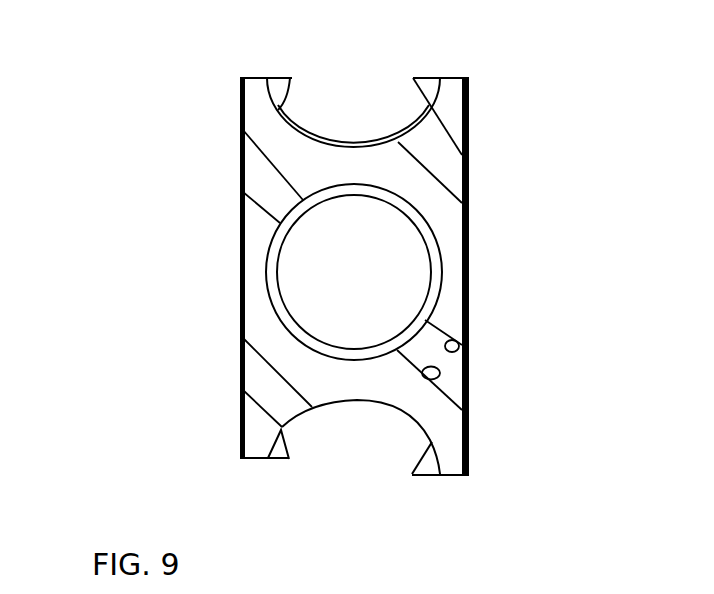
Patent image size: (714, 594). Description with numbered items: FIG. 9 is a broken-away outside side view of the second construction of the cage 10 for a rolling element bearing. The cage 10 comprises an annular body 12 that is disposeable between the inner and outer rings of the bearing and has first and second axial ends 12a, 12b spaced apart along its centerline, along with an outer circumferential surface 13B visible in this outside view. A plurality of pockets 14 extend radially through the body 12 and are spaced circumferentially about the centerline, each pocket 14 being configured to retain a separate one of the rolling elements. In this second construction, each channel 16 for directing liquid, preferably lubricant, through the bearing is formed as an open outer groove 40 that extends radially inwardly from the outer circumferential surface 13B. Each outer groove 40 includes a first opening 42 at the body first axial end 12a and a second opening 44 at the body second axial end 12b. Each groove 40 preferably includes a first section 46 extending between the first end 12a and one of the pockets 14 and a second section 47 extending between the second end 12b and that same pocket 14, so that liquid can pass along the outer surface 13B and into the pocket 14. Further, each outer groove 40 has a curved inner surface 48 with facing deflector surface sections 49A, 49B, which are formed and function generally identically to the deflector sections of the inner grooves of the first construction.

The cage 10 is at (113, 118).
The annular body 12 is at (193, 218).
The first axial end 12a is at (472, 315).
The second axial end 12b is at (242, 258).
The outer circumferential surface 13B is at (388, 387).
The pocket 14 is at (395, 102).
The channel 16 is at (523, 190).
The open outer groove 40 is at (475, 195).
The first opening 42 is at (470, 183).
The second opening 44 is at (243, 165).
The first section 46 is at (438, 153).
The second section 47 is at (256, 179).
The curved inner surface 48 is at (275, 190).
The deflector surface section 49A is at (423, 378).
The deflector surface section 49B is at (470, 335).